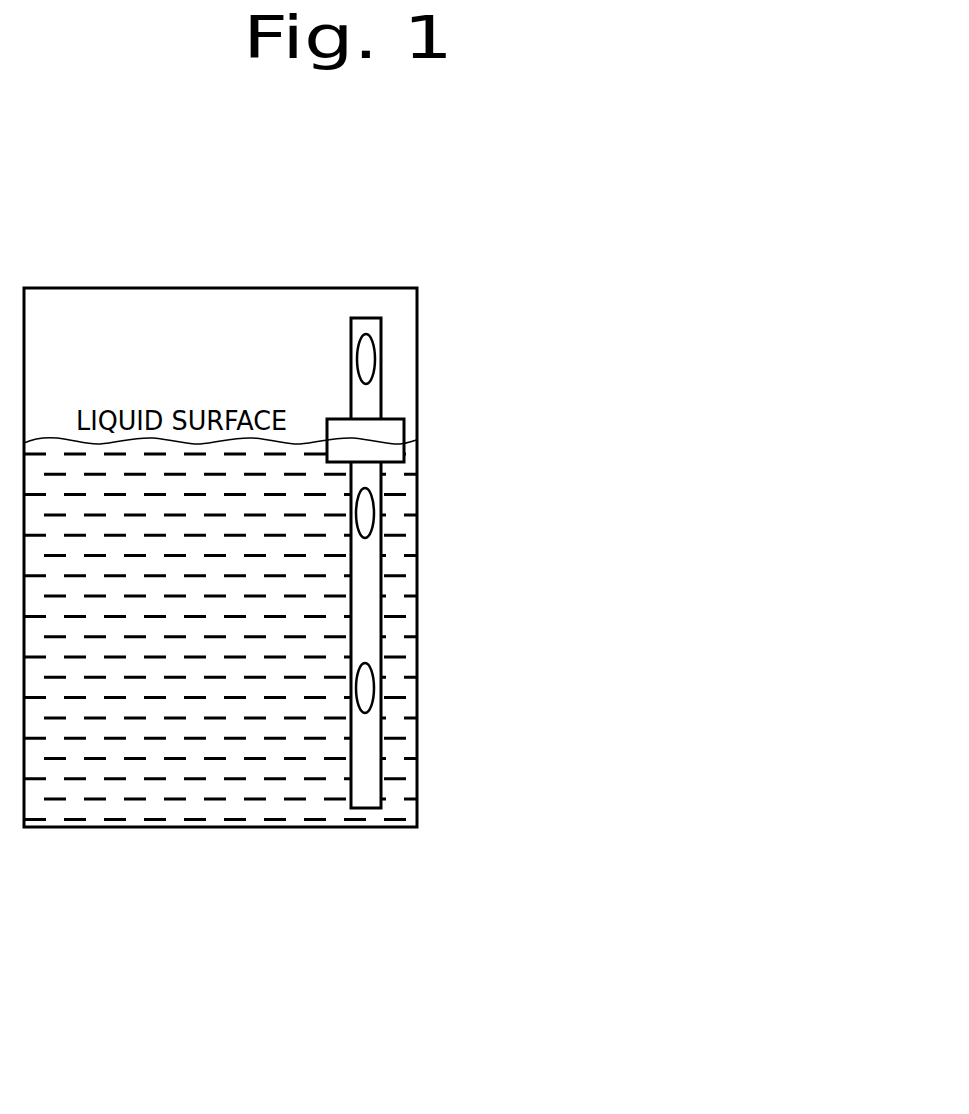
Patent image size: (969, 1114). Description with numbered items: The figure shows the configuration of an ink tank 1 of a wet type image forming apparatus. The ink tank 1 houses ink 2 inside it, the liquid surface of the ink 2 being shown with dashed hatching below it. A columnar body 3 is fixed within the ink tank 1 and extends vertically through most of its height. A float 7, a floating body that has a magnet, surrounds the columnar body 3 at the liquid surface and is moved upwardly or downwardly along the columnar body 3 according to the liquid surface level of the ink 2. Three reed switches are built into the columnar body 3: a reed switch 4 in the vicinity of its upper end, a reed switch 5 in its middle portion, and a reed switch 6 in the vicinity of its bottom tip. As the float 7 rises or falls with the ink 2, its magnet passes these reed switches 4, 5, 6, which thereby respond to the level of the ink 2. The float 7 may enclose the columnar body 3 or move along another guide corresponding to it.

The ink tank 1 is at (67, 286).
The ink 2 is at (155, 755).
The columnar body 3 is at (367, 327).
The reed switch 4 is at (367, 359).
The reed switch 5 is at (367, 523).
The reed switch 6 is at (367, 688).
The float 7 is at (404, 432).